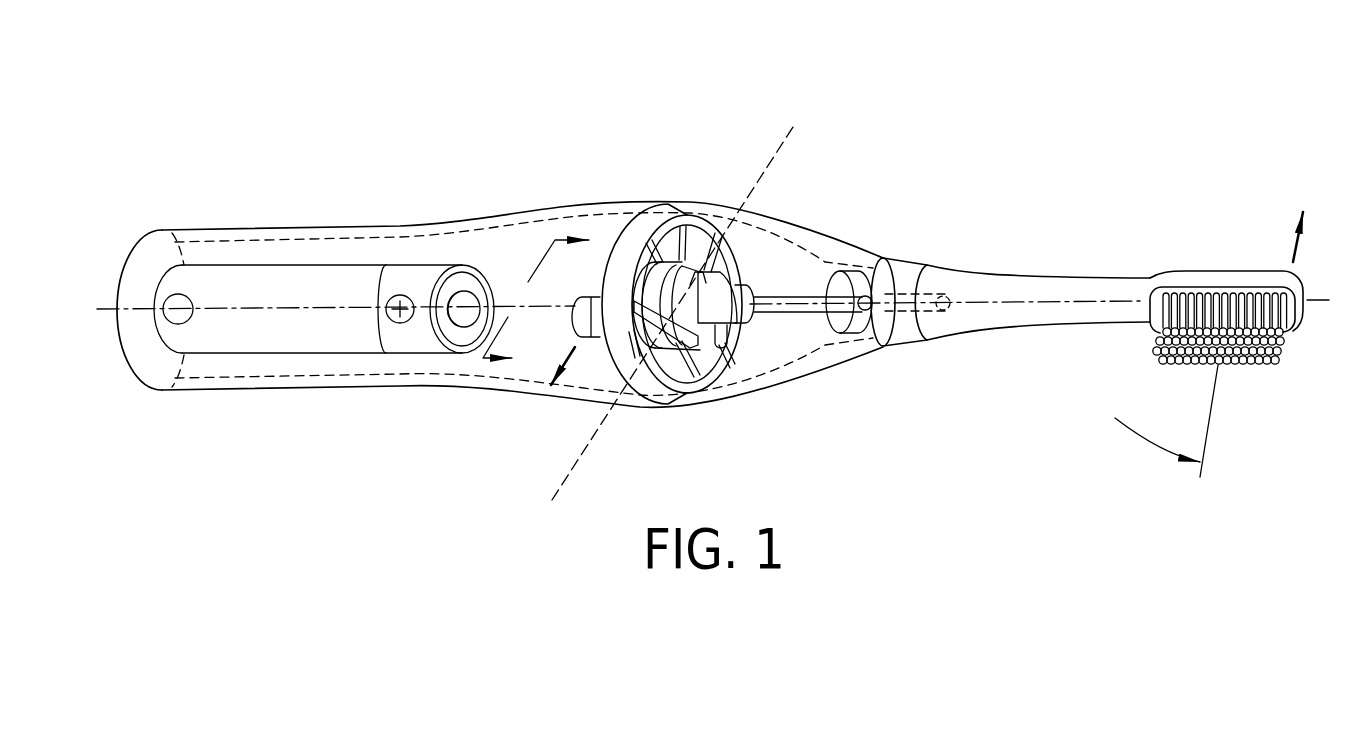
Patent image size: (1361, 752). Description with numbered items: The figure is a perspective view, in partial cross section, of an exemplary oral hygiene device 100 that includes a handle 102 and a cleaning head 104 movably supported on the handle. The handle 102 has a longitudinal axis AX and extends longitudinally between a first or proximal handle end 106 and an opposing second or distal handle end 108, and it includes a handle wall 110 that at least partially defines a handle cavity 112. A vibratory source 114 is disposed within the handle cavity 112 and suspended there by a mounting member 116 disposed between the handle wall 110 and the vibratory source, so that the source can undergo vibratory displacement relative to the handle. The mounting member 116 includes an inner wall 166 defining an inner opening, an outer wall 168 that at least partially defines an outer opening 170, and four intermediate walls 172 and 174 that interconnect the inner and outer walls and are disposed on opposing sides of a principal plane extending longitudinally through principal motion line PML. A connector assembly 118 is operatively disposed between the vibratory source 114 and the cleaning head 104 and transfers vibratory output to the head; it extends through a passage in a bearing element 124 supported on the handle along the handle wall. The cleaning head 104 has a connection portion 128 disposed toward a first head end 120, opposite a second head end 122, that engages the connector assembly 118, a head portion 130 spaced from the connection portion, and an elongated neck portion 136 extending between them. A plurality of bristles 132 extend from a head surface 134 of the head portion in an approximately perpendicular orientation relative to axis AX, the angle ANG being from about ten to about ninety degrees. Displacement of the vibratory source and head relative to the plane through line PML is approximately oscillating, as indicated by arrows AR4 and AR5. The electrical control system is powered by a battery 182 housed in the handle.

The oral hygiene device 100 is at (968, 132).
The handle 102 is at (490, 193).
The cleaning head 104 is at (1115, 268).
The first or proximal handle end 106 is at (176, 227).
The second or distal handle end 108 is at (872, 245).
The handle wall 110 is at (257, 232).
The handle cavity 112 is at (487, 247).
The vibratory source 114 is at (593, 293).
The mounting member 116 is at (668, 217).
The connector assembly 118 is at (803, 318).
The first head end 120 is at (910, 352).
The bristle tufts 122 is at (1232, 381).
The bearing element 124 is at (822, 276).
The connection portion 128 is at (955, 263).
The head portion 130 is at (1255, 270).
The plurality of bristles 132 is at (1268, 362).
The head surface 134 is at (1297, 317).
The elongated neck portion 136 is at (1090, 276).
The inner wall 166 is at (660, 347).
The outer wall 168 is at (648, 222).
The outer opening 170 is at (720, 247).
The intermediate wall 172 is at (672, 272).
The intermediate wall 174 is at (703, 368).
The battery 182 is at (250, 353).
The longitudinal axis AX is at (106, 305).
The arrow AR4 is at (585, 363).
The arrow AR5 is at (1295, 243).
The angle ANG is at (1066, 309).
The principal motion line PML is at (570, 480).